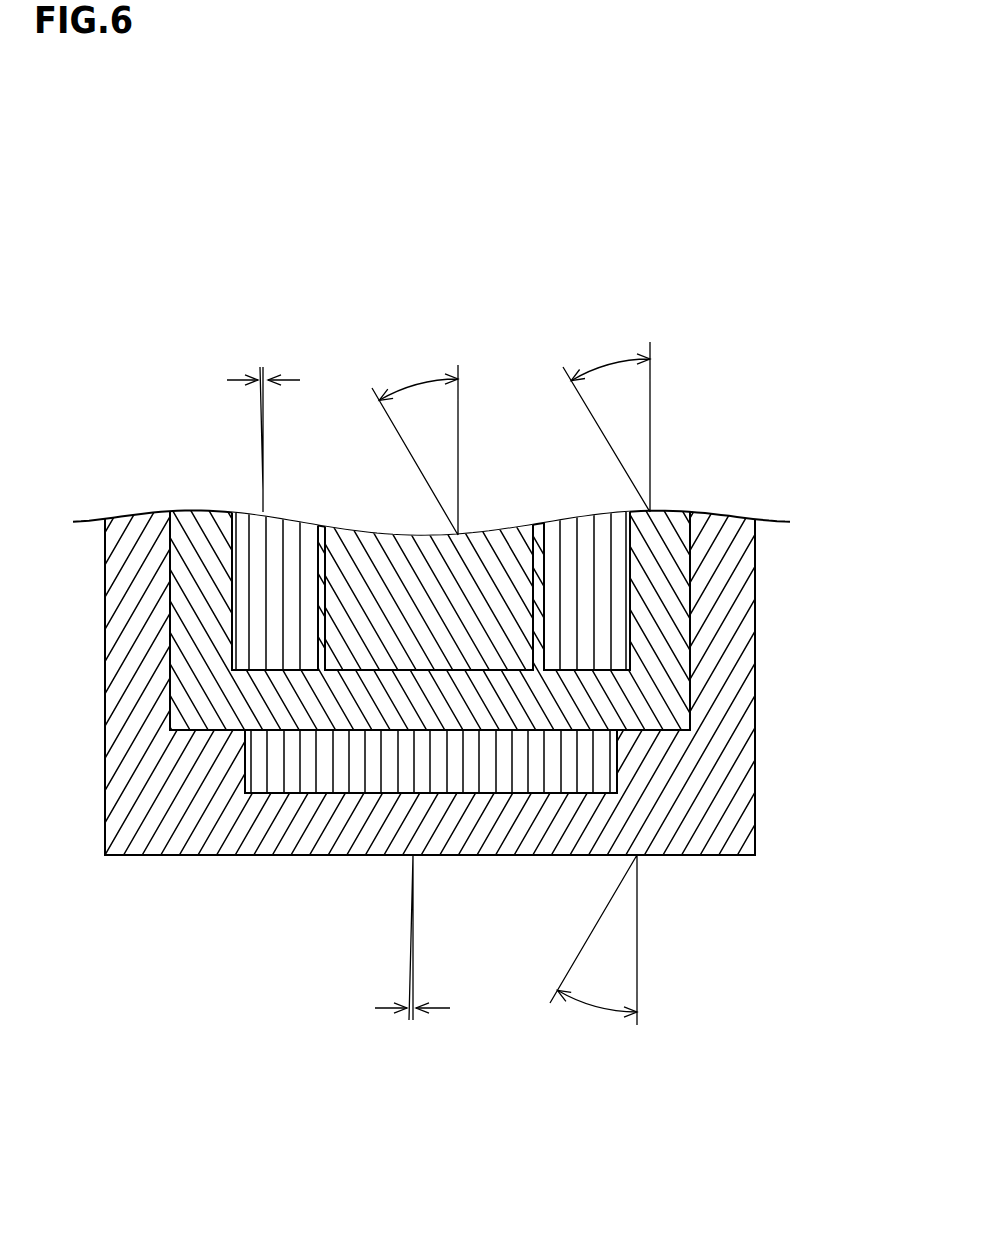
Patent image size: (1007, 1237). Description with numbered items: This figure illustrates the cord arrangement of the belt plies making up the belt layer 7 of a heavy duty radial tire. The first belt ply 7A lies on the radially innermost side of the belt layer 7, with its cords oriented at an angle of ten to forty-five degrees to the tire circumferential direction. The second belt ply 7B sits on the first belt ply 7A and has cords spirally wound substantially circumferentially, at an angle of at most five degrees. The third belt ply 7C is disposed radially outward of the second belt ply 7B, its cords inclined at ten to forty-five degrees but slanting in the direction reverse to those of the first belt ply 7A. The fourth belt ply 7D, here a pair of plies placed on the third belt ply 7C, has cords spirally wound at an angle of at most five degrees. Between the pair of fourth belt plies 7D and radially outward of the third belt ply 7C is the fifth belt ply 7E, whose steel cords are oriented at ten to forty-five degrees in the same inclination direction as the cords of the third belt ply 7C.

The belt layer 7 is at (741, 470).
The first belt ply 7A is at (755, 699).
The second belt ply 7B is at (617, 757).
The third belt ply 7C is at (690, 652).
The fourth belt ply 7D is at (243, 603).
The fifth belt ply 7E is at (512, 540).